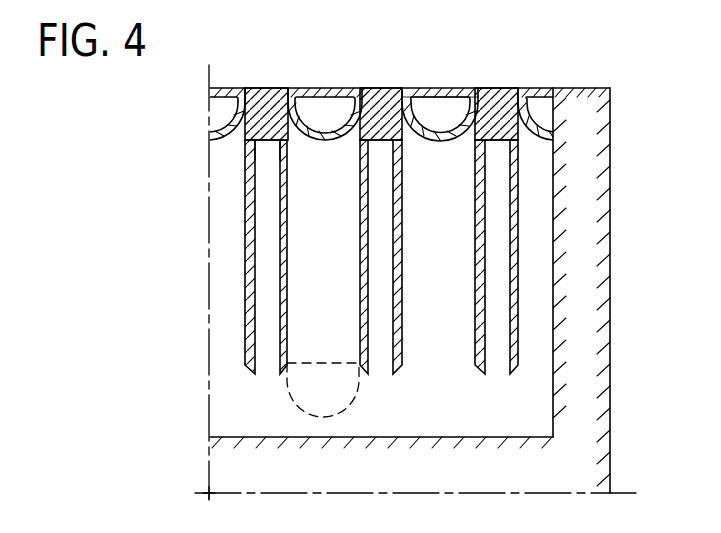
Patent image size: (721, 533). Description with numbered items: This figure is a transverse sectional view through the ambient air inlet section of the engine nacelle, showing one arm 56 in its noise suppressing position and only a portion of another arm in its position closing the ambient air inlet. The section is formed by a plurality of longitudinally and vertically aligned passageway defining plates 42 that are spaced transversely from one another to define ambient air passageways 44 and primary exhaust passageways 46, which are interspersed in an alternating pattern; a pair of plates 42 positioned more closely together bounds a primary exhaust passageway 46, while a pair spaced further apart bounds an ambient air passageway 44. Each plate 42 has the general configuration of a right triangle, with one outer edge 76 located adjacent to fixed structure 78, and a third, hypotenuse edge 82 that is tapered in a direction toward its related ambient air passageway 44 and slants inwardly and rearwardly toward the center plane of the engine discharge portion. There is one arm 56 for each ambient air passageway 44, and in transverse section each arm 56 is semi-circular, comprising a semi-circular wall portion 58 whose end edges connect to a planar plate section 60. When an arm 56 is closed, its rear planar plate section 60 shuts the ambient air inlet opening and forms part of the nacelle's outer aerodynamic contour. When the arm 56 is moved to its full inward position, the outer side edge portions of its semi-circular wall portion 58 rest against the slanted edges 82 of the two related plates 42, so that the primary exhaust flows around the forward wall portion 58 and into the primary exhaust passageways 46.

The passageway defining plate 42 is at (483, 300).
The ambient air passageway 44 is at (455, 230).
The primary exhaust passageway 46 is at (498, 255).
The arm 56 is at (312, 142).
The semi-circular wall portion 58 is at (442, 125).
The planar plate section 60 is at (425, 92).
The outer edge 76 is at (259, 98).
The fixed structure 78 is at (270, 93).
The hypotenuse edge 82 is at (283, 373).